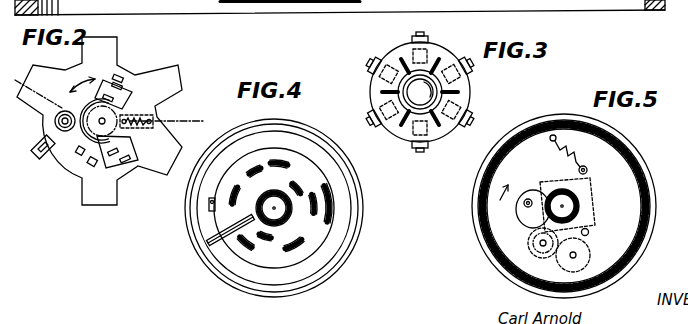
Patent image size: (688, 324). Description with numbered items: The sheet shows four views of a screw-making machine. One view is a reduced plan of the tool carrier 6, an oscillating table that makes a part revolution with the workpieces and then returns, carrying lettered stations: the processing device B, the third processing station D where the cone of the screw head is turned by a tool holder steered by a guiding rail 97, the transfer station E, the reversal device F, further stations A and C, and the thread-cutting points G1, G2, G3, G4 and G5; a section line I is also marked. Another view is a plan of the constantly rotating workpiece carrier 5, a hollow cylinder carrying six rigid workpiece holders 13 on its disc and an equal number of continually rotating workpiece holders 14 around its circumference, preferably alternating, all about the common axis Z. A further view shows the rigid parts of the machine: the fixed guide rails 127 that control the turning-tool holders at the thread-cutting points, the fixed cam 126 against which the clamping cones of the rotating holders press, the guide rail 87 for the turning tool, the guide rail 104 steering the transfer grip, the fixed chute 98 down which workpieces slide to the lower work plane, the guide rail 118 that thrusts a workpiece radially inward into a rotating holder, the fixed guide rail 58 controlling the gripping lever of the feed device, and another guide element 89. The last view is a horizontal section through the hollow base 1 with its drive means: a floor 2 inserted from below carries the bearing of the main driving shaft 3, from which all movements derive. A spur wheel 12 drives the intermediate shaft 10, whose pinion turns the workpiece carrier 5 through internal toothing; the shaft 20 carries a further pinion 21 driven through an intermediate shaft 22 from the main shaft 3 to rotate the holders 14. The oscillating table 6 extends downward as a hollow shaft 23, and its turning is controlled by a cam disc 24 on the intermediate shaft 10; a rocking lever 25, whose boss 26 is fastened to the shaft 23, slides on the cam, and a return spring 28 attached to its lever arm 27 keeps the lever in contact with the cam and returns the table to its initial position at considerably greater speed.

In FIG. 2, the pivot stud A is at (65, 131).
In FIG. 2, the processing device B is at (134, 72).
In FIG. 2, the latch block C is at (143, 132).
In FIG. 2, the third processing station D is at (110, 177).
In FIG. 2, the transfer station E is at (76, 195).
In FIG. 2, the reversal device F is at (26, 150).
In FIG. 2, the tool carrier 6 is at (73, 160).
In FIG. 2, the section line I is at (10, 92).
In FIG. 2, the processing point G1 is at (63, 84).
In FIG. 2, the processing point G2 is at (107, 50).
In FIG. 2, the processing point G3 is at (157, 85).
In FIG. 2, the processing point G4 is at (168, 182).
In FIG. 2, the processing point G5 is at (101, 200).
In FIG. 4, the fixed cam 126 is at (266, 198).
In FIG. 4, the fixed guide rails 127 is at (248, 162).
In FIG. 4, the guide rail 87 is at (297, 180).
In FIG. 4, the guiding rail 97 is at (307, 210).
In FIG. 4, the vane 89 is at (310, 223).
In FIG. 4, the guide rail 104 is at (258, 240).
In FIG. 4, the fixed chute 98 is at (210, 248).
In FIG. 4, the guide rail 58 is at (236, 212).
In FIG. 4, the guide rail 118 is at (207, 215).
In FIG. 3, the common axis Z is at (343, 18).
In FIG. 3, the workpiece carrier 5 is at (460, 54).
In FIG. 3, the rigid workpiece holders 13 is at (405, 63).
In FIG. 3, the rotating workpiece holders 14 is at (436, 41).
In FIG. 5, the hollow base 1 is at (652, 200).
In FIG. 5, the floor 2 is at (613, 168).
In FIG. 5, the main driving shaft 3 is at (540, 243).
In FIG. 5, the intermediate shaft 10 is at (532, 195).
In FIG. 5, the spur wheel 12 is at (520, 210).
In FIG. 5, the shaft 20 is at (589, 232).
In FIG. 5, the further pinion 21 is at (586, 244).
In FIG. 5, the intermediate shaft 22 is at (578, 256).
In FIG. 5, the hollow shaft 23 is at (560, 212).
In FIG. 5, the cam disc 24 is at (524, 216).
In FIG. 5, the rocking lever 25 is at (538, 182).
In FIG. 5, the boss 26 is at (588, 202).
In FIG. 5, the lever arm 27 is at (587, 171).
In FIG. 5, the return spring 28 is at (572, 152).